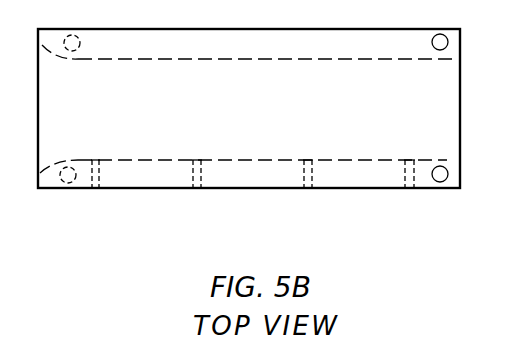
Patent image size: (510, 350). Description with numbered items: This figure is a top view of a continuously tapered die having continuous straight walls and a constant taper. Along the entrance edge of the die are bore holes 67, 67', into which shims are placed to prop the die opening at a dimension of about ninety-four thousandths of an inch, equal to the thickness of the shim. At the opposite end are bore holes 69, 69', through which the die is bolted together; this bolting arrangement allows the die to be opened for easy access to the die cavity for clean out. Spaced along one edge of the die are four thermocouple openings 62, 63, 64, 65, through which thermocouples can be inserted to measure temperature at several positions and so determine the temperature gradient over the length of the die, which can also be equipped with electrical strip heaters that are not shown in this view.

The bore hole 67 is at (55, 27).
The bore hole 69 is at (422, 26).
The bore hole 67' is at (52, 193).
The bore hole 69' is at (459, 193).
The thermocouple insertion opening 62 is at (98, 189).
The thermocouple insertion opening 63 is at (193, 189).
The thermocouple insertion opening 64 is at (305, 189).
The thermocouple insertion opening 65 is at (405, 189).